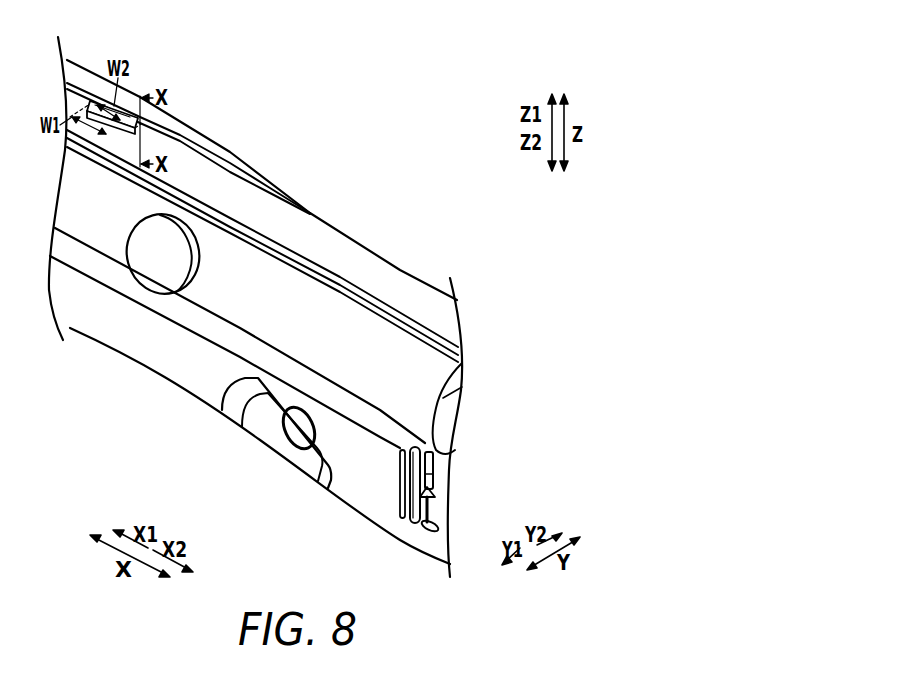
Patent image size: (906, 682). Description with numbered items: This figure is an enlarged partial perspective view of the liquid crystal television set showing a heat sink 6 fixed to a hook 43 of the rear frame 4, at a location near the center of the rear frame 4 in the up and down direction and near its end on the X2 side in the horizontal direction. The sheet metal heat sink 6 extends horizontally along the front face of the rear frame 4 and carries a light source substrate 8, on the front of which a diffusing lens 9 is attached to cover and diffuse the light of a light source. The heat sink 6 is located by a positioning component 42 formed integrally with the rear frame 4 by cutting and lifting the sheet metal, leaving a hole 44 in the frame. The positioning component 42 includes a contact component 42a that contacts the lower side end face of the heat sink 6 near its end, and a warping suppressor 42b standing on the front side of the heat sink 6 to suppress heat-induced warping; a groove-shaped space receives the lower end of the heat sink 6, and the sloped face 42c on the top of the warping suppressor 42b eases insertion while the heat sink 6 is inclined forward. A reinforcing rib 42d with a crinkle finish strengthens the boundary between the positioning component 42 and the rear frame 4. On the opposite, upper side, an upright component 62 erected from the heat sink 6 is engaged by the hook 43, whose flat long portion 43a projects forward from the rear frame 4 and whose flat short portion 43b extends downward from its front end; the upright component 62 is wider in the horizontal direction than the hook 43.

The rear frame 4 is at (100, 325).
The heat sink 6 is at (357, 270).
The light source substrate 8 is at (257, 288).
The diffusing lens 9 is at (160, 252).
The positioning component 42 is at (476, 448).
The contact component 42a is at (430, 476).
The warping suppressor 42b is at (428, 454).
The sloped face 42c is at (425, 440).
The reinforcing rib 42d is at (429, 494).
The hook 43 is at (114, 65).
The long portion 43a is at (113, 109).
The short portion 43b is at (102, 101).
The hole 44 is at (400, 510).
The upright component 62 is at (141, 115).